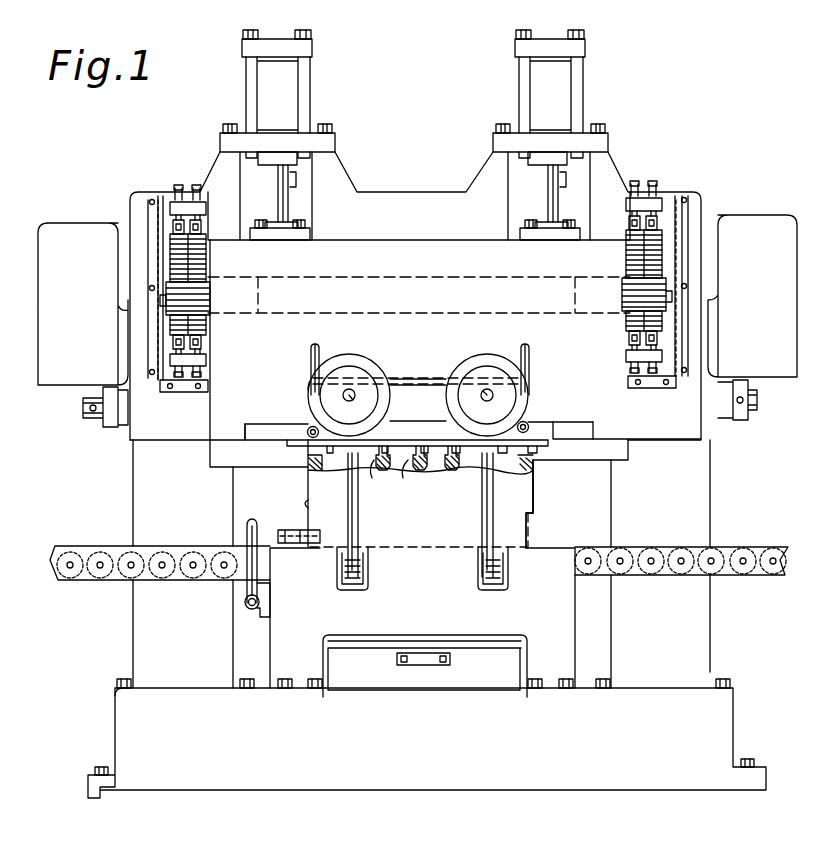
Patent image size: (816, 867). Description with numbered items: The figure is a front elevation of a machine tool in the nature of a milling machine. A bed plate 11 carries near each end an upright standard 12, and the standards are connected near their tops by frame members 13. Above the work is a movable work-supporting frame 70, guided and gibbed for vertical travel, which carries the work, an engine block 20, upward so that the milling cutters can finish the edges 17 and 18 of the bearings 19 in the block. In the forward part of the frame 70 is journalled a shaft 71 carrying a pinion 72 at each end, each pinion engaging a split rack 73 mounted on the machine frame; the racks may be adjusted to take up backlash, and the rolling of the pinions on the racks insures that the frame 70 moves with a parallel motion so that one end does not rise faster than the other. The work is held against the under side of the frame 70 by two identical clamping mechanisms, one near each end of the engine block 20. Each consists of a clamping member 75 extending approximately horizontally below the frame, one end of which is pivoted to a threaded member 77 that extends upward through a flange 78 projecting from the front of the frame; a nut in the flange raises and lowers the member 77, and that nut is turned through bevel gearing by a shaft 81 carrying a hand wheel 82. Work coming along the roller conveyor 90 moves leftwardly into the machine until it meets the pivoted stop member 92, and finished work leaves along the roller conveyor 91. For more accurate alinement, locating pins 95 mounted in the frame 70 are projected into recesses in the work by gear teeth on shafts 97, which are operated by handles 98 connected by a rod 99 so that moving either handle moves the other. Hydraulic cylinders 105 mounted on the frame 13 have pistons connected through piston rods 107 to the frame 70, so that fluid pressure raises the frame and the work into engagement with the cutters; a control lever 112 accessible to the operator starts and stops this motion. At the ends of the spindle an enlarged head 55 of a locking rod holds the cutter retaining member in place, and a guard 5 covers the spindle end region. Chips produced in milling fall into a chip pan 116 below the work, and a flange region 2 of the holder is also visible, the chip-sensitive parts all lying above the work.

The die holder part 2 is at (535, 514).
The flywheel guard 5 is at (398, 319).
The bed plate 11 is at (735, 720).
The upright standard 12 is at (132, 614).
The frame member 13 is at (428, 190).
The bearing edge 17 is at (384, 471).
The bearing edge 18 is at (392, 482).
The bearing 19 is at (445, 448).
The engine block 20 is at (310, 482).
The enlarged head 55 is at (87, 414).
The work-supporting frame 70 is at (415, 372).
The shaft 71 is at (453, 281).
The pinion 72 is at (212, 288).
The split rack 73 is at (190, 245).
The clamping member 75 is at (478, 576).
The member 77 is at (350, 518).
The flange 78 is at (288, 432).
The shaft 81 is at (415, 401).
The hand wheel 82 is at (362, 362).
The roller conveyor 90 is at (730, 547).
The roller conveyor 91 is at (103, 546).
The pivoted stop member 92 is at (293, 531).
The pin 95 is at (300, 445).
The shaft 97 is at (308, 428).
The handle 98 is at (310, 352).
The rod 99 is at (418, 378).
The hydraulic cylinder 105 is at (313, 82).
The piston rod 107 is at (289, 206).
The control lever 112 is at (249, 526).
The chip pan 116 is at (372, 676).